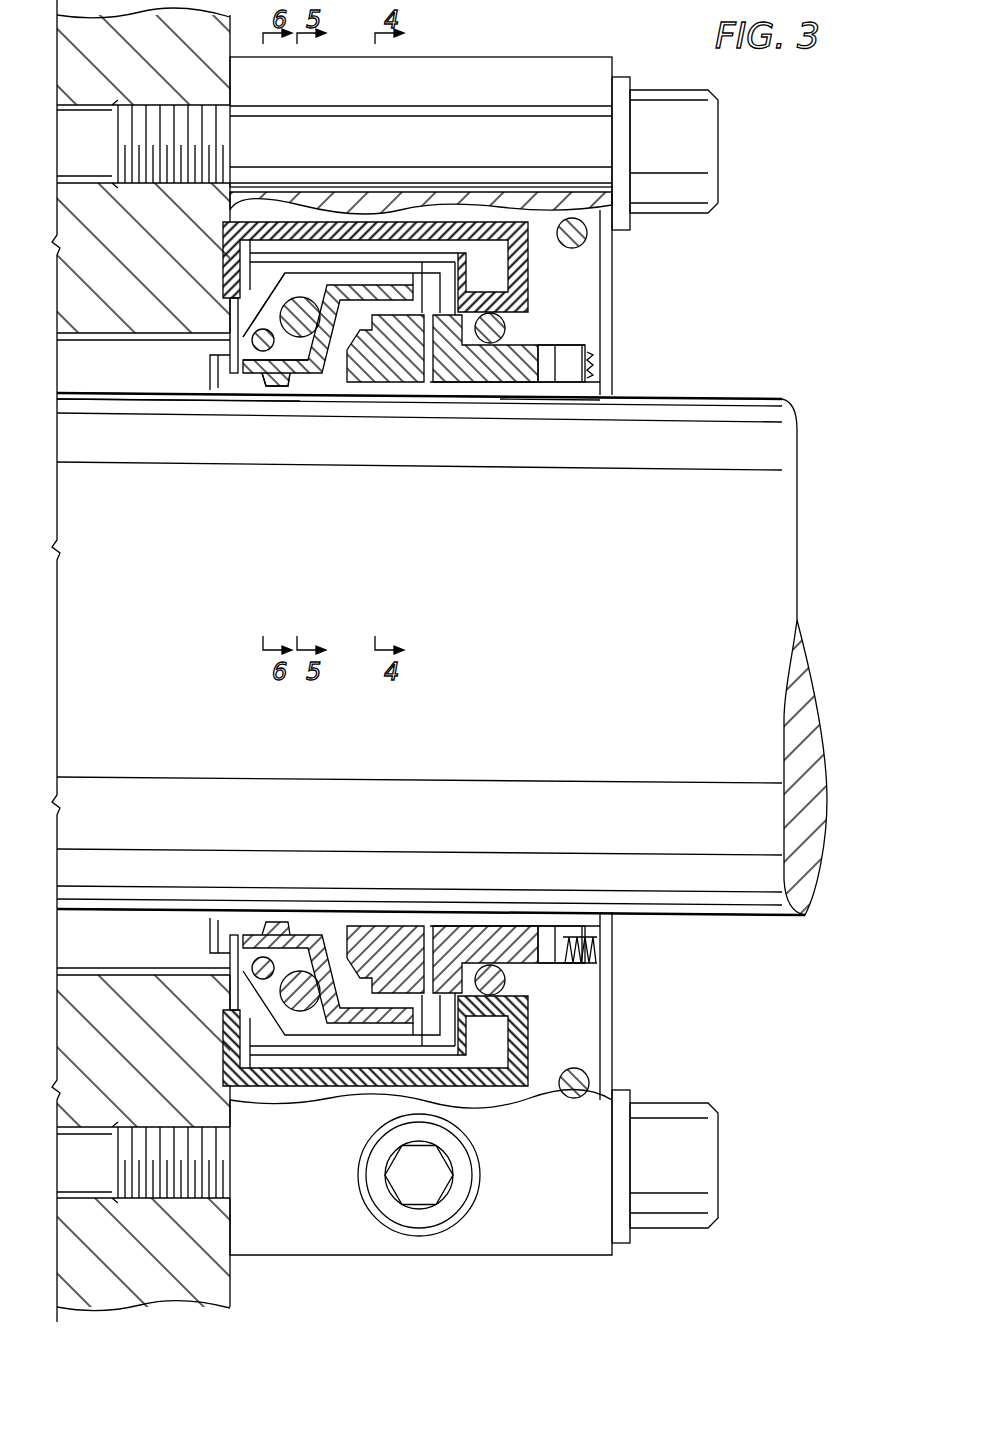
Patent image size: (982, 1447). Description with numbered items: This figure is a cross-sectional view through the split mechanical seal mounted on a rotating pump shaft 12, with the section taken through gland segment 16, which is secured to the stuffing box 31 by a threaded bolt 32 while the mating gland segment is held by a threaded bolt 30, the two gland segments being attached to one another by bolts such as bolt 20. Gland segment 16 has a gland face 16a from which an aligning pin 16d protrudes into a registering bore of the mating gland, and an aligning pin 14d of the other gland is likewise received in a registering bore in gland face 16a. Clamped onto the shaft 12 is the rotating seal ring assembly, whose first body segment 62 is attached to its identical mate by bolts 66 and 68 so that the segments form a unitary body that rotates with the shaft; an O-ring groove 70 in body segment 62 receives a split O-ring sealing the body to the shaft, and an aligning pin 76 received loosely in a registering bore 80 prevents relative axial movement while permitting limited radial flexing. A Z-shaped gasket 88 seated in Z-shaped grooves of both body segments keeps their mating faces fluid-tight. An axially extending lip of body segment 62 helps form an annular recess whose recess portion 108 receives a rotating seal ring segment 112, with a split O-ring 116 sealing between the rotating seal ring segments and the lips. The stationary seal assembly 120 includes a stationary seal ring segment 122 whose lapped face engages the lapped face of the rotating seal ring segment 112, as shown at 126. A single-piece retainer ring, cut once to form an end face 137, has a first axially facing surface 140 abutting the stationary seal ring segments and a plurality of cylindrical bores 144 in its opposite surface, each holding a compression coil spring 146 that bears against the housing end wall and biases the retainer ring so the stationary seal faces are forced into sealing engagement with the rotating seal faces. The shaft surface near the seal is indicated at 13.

The rotating shaft 12 is at (580, 623).
The shaft surface 13 is at (90, 383).
The gland segment 16 is at (500, 73).
The gland face 16a is at (593, 998).
The aligning pin 16d is at (590, 240).
The aligning pin 14d is at (590, 1075).
The bolt 20 is at (385, 1180).
The threaded bolt 30 is at (700, 1140).
The stuffing box 31 is at (70, 58).
The threaded bolt 32 is at (700, 133).
The first body segment 62 is at (260, 384).
The bolt 66 is at (283, 305).
The bolt 68 is at (285, 993).
The O-ring groove 70 is at (273, 388).
The aligning pin 76 is at (245, 378).
The registering bore 80 is at (255, 342).
The Z-shaped gasket 88 is at (352, 290).
The recess portion 108 is at (358, 925).
The rotating seal ring segment 112 is at (403, 386).
The split O-ring 116 is at (390, 990).
The stationary seal assembly 120 is at (538, 406).
The stationary seal ring segment 122 is at (470, 386).
The seal faces engagement 126 is at (452, 980).
The end face 137 is at (560, 357).
The first axially facing surface 140 is at (535, 325).
The cylindrical bore 144 is at (597, 950).
The compression coil spring 146 is at (577, 935).